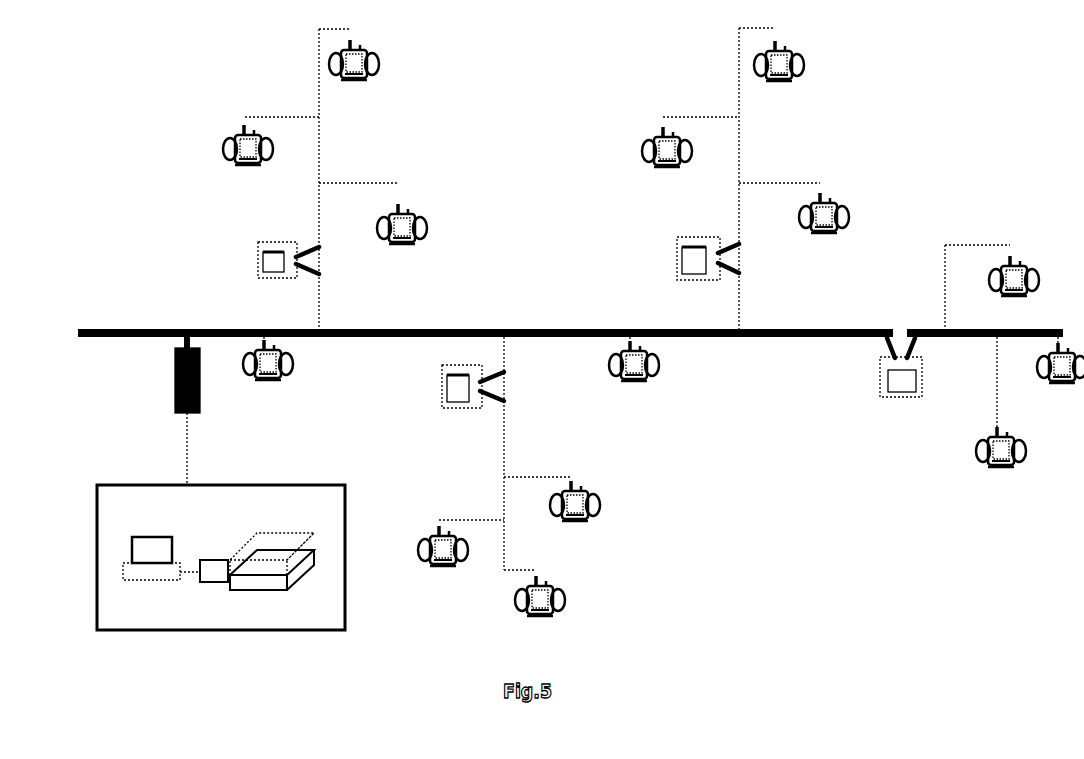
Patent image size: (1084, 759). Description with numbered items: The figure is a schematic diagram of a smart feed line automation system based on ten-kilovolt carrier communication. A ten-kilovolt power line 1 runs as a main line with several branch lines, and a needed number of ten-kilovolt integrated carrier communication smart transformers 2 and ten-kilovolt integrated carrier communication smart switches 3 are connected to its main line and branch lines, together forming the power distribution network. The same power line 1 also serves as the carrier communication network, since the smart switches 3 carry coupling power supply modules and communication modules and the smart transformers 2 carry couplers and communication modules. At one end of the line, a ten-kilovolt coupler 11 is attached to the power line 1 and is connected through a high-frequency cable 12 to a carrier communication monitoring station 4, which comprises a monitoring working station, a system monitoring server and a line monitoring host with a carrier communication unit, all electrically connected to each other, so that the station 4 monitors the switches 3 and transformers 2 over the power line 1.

The 10 kV power line 1 is at (158, 315).
The 10 kV integrated carrier communication smart transformer 2 is at (596, 513).
The 10 kV integrated carrier communication smart switch 3 is at (705, 280).
The carrier communication monitoring station 4 is at (332, 595).
The 10 kV coupler 11 is at (190, 413).
The high-frequency cable 12 is at (203, 450).